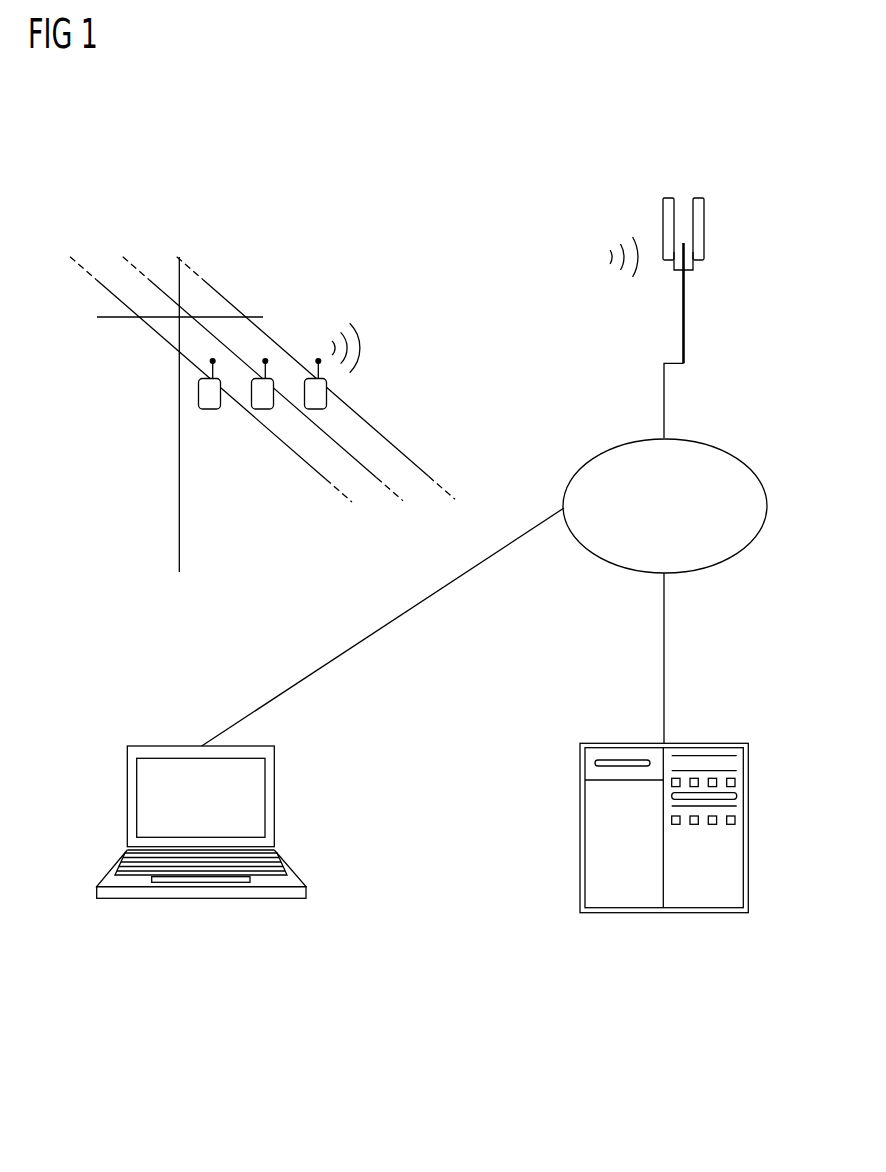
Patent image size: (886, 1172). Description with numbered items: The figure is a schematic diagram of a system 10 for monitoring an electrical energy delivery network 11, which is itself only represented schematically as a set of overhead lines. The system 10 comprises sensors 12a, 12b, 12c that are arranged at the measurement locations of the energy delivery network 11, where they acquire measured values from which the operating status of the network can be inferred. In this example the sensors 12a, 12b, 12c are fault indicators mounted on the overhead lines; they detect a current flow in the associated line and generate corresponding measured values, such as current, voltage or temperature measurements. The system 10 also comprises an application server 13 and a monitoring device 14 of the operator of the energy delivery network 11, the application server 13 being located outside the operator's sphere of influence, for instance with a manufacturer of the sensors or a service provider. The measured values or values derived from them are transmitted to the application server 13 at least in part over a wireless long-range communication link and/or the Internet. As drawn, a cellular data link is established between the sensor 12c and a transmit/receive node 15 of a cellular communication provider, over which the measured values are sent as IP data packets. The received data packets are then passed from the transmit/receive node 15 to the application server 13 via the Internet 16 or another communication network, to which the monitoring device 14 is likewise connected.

The system 10 is at (381, 184).
The energy delivery network 11 is at (116, 422).
The sensor 12a is at (210, 410).
The sensor 12b is at (262, 410).
The sensor 12c is at (326, 400).
The application server 13 is at (650, 913).
The monitoring device 14 is at (188, 893).
The transmit/receive node 15 is at (687, 307).
The Internet 16 is at (592, 457).